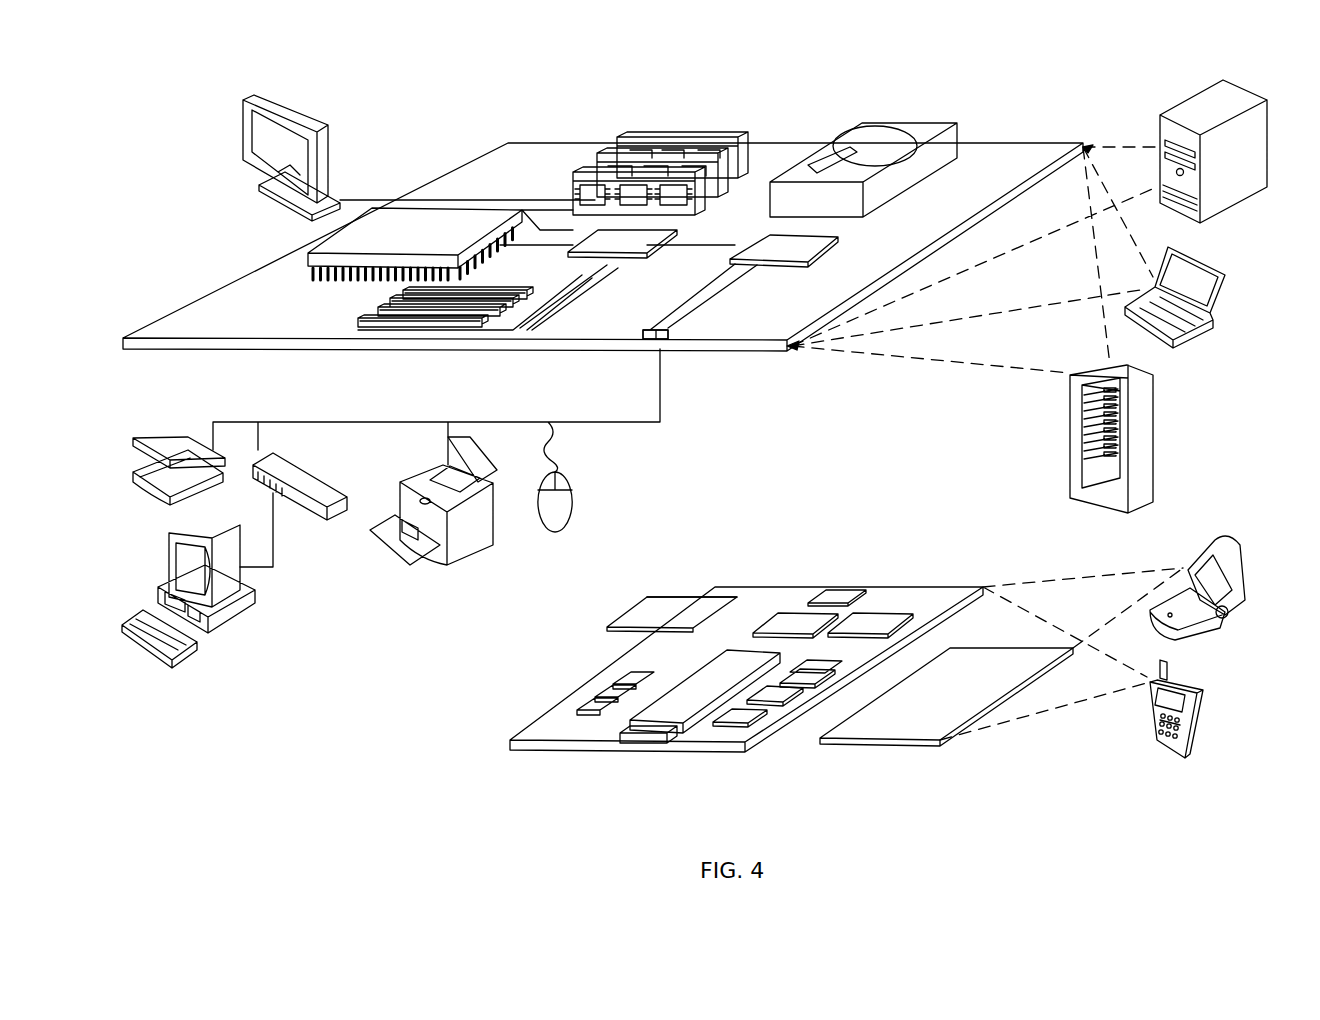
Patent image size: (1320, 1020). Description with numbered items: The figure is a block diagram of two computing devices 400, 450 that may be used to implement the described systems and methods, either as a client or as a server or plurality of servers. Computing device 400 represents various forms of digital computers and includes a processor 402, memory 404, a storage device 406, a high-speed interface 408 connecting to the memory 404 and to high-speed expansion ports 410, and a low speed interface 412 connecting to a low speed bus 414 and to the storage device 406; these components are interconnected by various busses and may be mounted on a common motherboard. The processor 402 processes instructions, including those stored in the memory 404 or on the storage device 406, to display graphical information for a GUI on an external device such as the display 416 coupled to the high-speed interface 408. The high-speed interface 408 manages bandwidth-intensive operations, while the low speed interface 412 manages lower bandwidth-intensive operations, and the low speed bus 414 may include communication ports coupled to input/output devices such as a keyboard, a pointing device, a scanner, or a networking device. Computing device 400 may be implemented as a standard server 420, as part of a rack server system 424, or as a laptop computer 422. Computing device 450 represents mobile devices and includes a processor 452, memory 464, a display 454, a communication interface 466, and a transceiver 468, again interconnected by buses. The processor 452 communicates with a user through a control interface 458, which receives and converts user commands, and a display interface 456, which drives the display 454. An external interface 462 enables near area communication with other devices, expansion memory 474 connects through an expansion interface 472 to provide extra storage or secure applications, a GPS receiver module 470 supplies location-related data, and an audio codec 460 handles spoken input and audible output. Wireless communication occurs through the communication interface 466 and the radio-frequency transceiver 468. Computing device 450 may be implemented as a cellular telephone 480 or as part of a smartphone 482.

The computing device 400 is at (433, 118).
The processor 402 is at (310, 258).
The memory 404 is at (640, 135).
The storage device 406 is at (857, 123).
The high-speed interface 408 is at (598, 243).
The high-speed expansion ports 410 is at (380, 313).
The low speed interface 412 is at (770, 247).
The low speed bus 414 is at (658, 347).
The display 416 is at (250, 93).
The standard server 420 is at (1158, 125).
The laptop computer 422 is at (1222, 277).
The rack server system 424 is at (1072, 460).
The computing device 450 is at (487, 748).
The processor 452 is at (678, 708).
The display 454 is at (907, 727).
The display interface 456 is at (752, 727).
The control interface 458 is at (800, 675).
The audio codec 460 is at (807, 700).
The external interface 462 is at (645, 743).
The memory 464 is at (600, 700).
The communication interface 466 is at (793, 623).
The transceiver 468 is at (870, 618).
The GPS receiver module 470 is at (845, 595).
The expansion interface 472 is at (718, 597).
The expansion memory 474 is at (658, 597).
The cellular telephone 480 is at (1203, 545).
The smartphone 482 is at (1150, 712).